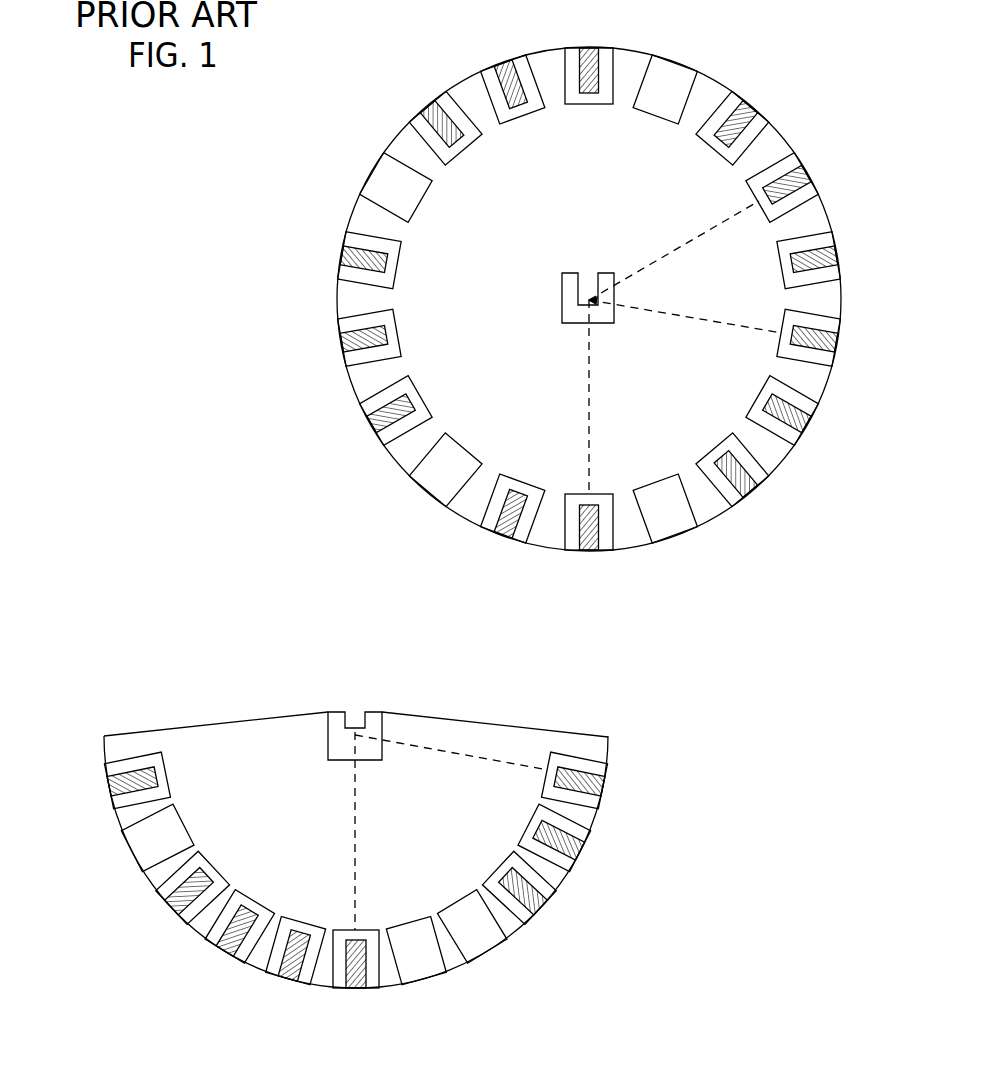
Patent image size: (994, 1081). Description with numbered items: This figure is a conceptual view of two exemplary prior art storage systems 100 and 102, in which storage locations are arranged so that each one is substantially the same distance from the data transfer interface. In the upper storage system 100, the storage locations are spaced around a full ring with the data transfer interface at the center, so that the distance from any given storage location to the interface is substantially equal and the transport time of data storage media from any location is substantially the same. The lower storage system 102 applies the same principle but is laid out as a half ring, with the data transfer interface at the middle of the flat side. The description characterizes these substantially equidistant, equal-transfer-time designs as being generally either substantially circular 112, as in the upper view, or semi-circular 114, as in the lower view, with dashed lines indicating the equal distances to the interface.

The storage system 100 is at (343, 152).
The storage system 102 is at (650, 732).
The circular storage system 112 is at (336, 305).
The semi-circular storage system 114 is at (592, 823).